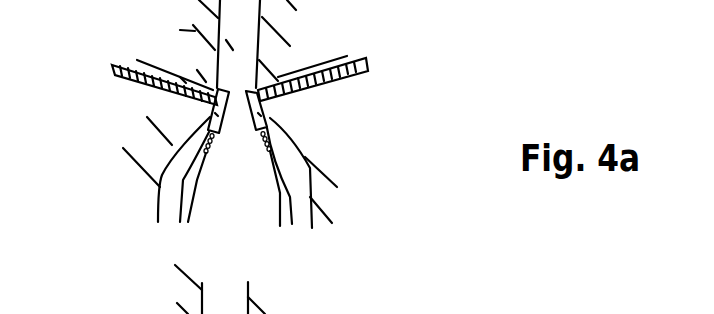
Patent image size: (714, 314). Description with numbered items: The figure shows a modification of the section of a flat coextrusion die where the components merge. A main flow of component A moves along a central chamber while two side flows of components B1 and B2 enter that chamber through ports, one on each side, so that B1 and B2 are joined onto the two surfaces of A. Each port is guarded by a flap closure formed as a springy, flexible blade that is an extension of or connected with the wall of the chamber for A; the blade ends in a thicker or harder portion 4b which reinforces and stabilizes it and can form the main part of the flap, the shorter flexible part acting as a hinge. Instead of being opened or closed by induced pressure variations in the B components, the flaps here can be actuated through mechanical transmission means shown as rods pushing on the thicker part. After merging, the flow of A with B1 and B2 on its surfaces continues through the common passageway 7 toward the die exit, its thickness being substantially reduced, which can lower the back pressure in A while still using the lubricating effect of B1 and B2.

The common passageway 7 is at (211, 37).
The thicker or harder portion 4b is at (237, 125).
The component A flow A is at (240, 168).
The component B1 flow B1 is at (168, 207).
The component B2 flow B2 is at (298, 212).